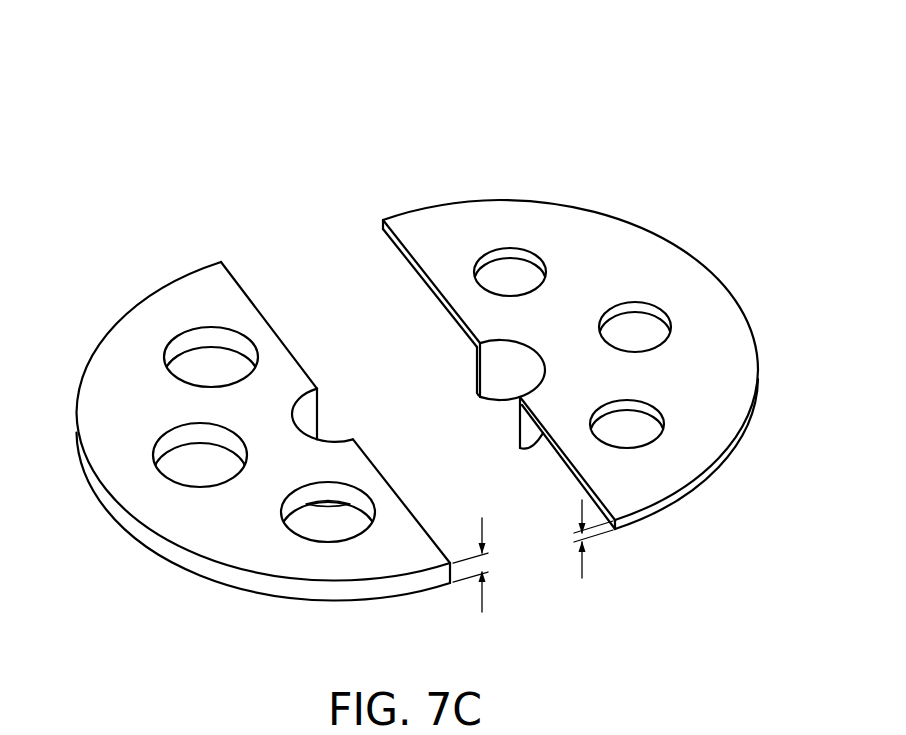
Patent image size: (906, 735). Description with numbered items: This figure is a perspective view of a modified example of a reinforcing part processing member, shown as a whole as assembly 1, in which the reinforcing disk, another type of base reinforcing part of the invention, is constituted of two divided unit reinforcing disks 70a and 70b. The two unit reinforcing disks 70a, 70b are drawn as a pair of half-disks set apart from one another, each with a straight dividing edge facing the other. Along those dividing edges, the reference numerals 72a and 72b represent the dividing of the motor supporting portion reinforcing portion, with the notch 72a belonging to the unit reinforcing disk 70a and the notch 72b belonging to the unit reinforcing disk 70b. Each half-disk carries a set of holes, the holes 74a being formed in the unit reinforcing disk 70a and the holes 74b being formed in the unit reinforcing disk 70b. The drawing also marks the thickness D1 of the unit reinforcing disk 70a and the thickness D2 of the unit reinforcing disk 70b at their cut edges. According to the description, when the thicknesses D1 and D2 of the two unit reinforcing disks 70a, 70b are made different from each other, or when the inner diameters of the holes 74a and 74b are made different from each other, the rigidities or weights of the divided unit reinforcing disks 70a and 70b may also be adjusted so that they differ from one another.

The heat exchanger plate assembly 1 is at (382, 91).
The unit reinforcing disk 70a is at (517, 215).
The unit reinforcing disk 70b is at (180, 297).
The dividing of the motor supporting portion reinforcing portion 72a is at (497, 372).
The dividing of the motor supporting portion reinforcing portion 72b is at (307, 412).
The holes 74a is at (635, 308).
The holes 74b is at (167, 449).
The thickness D1 is at (579, 544).
The thickness D2 is at (485, 569).